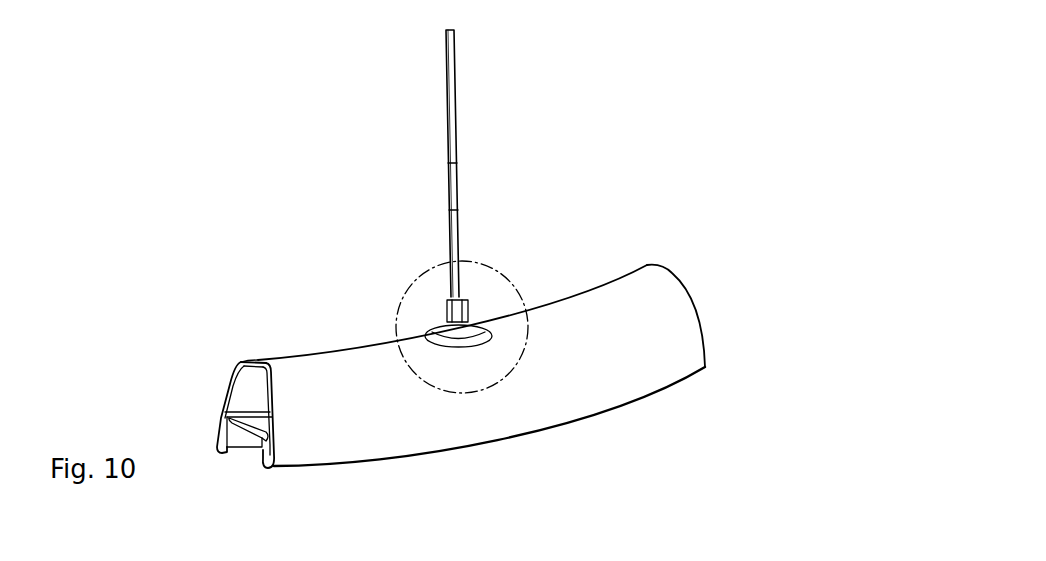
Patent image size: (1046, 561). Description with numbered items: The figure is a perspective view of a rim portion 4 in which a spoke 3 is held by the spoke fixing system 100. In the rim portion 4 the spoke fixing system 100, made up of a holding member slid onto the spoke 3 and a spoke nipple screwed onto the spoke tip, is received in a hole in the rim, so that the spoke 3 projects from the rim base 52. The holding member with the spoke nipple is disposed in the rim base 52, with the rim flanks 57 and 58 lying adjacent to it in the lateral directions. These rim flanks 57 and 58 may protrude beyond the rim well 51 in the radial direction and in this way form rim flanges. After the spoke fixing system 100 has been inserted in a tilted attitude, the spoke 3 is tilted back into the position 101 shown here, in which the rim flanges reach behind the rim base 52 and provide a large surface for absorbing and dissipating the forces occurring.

The spoke 3 is at (452, 128).
The rim portion 4 is at (625, 415).
The rim well 51 is at (252, 433).
The rim base 52 is at (270, 358).
The rim flank 57 is at (217, 393).
The rim flank 58 is at (285, 416).
The spoke fixing system 100 is at (420, 153).
The position 101 is at (398, 227).